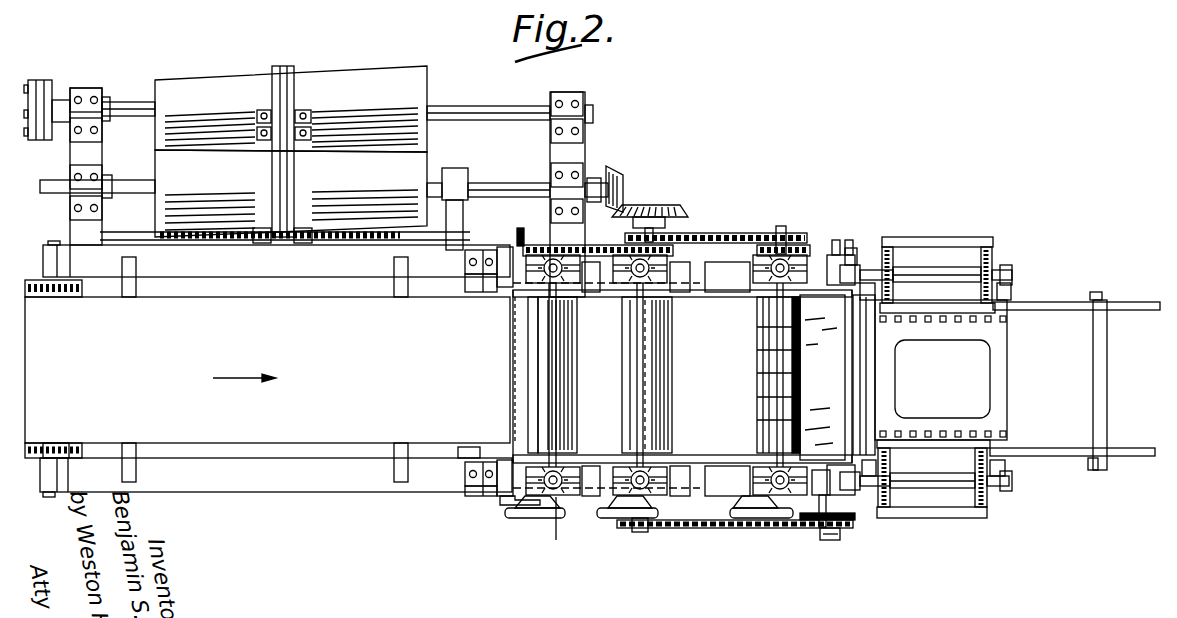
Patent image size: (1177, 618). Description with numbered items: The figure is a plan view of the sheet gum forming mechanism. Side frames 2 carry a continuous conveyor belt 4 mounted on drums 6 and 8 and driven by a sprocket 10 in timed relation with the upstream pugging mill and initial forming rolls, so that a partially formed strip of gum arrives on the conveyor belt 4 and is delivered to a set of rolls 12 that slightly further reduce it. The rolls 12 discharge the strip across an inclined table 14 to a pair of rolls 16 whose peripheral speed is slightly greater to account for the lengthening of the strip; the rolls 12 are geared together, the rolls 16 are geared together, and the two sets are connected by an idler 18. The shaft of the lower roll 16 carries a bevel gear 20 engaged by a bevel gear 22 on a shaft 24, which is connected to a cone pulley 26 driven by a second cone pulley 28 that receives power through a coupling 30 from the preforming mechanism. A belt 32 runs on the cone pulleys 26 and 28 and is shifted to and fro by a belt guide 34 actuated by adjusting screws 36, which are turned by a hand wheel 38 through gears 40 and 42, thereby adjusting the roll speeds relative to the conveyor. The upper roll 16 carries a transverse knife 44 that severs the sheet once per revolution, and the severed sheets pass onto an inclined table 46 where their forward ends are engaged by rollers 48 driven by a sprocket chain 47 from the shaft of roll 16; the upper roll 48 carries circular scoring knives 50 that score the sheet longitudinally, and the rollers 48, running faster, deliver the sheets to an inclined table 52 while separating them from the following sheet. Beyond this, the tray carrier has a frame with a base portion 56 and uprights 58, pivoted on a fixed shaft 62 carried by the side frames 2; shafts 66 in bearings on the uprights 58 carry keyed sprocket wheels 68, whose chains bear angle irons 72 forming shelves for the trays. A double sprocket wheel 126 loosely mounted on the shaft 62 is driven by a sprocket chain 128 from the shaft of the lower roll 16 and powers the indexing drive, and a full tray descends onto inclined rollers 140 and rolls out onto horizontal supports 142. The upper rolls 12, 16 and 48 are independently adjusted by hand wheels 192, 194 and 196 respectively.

The side frames 2 is at (276, 371).
The conveyor belt 4 is at (348, 420).
The drum 6 is at (70, 451).
The drum 8 is at (460, 454).
The sprocket 10 is at (33, 276).
The rolls 12 is at (555, 364).
The inclined table 14 is at (598, 497).
The rolls 16 is at (663, 356).
The idler 18 is at (604, 246).
The bevel gear 20 is at (684, 210).
The bevel gear 22 is at (616, 170).
The shaft 24 is at (524, 160).
The cone pulley 26 is at (291, 193).
The cone pulley 28 is at (291, 109).
The coupling 30 is at (48, 78).
The belt 32 is at (284, 52).
The belt guide 34 is at (248, 116).
The adjusting screws 36 is at (345, 245).
The hand wheel 38 is at (500, 506).
The gear 40 is at (530, 248).
The gear 42 is at (518, 232).
The transverse knife 44 is at (652, 392).
The inclined table 46 is at (713, 440).
The sprocket chain 47 is at (722, 232).
The rollers 48 is at (792, 388).
The circular scoring knives 50 is at (806, 375).
The inclined table 52 is at (818, 420).
The base portion 56 is at (1007, 380).
The uprights 58 is at (878, 290).
The fixed shaft 62 is at (830, 500).
The shafts 66 is at (962, 260).
The sprocket wheels 68 is at (884, 258).
The angle irons 72 is at (978, 236).
The double sprocket wheel 126 is at (840, 540).
The sprocket chain 128 is at (686, 526).
The rollers 140 is at (944, 428).
The horizontal supports 142 is at (1060, 310).
The hand wheel 192 is at (544, 520).
The hand wheel 194 is at (612, 520).
The hand wheel 196 is at (752, 522).